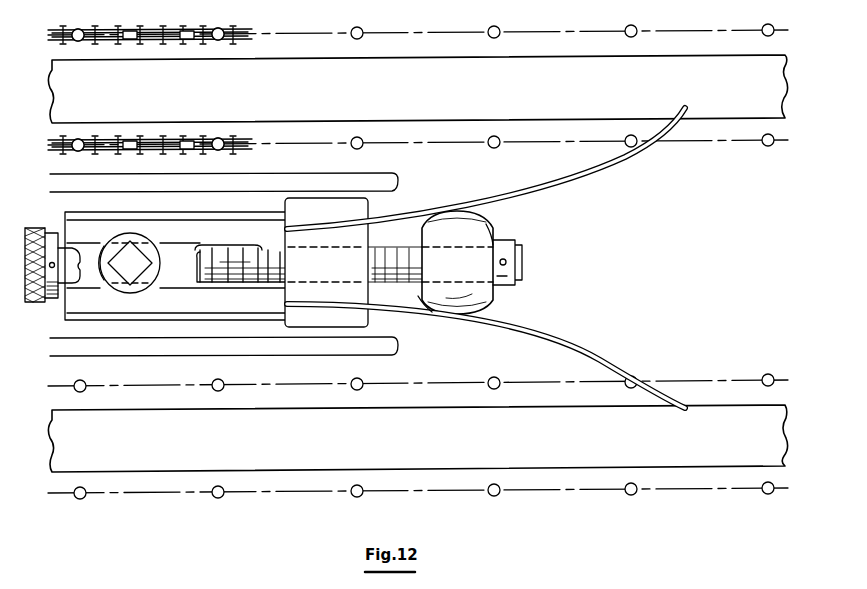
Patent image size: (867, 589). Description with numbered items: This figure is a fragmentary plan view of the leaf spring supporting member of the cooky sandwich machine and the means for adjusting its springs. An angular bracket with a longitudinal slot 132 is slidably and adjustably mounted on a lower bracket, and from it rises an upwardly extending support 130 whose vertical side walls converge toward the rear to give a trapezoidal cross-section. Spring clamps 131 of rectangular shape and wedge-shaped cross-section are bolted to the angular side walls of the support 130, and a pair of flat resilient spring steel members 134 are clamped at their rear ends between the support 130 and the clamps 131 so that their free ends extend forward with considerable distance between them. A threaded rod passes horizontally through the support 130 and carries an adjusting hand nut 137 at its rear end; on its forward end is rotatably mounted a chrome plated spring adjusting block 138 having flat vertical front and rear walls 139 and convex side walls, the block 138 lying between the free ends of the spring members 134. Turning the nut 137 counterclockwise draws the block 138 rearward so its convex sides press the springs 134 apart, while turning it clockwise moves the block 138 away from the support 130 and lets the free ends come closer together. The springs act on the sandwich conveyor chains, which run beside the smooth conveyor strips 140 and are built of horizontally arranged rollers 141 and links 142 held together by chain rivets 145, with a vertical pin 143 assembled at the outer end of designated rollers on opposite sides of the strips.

The upwardly extending support 130 is at (320, 256).
The spring clamps 131 is at (358, 211).
The slot 132 is at (178, 278).
The spring members 134 is at (613, 163).
The adjusting hand nut 137 is at (35, 304).
The spring adjusting block 138 is at (470, 271).
The flat vertical front and rear walls 139 is at (497, 228).
The conveyor strips 140 is at (390, 98).
The rollers 141 is at (109, 152).
The links 142 is at (126, 152).
The vertical pin 143 is at (80, 42).
The chain rivets 145 is at (182, 47).